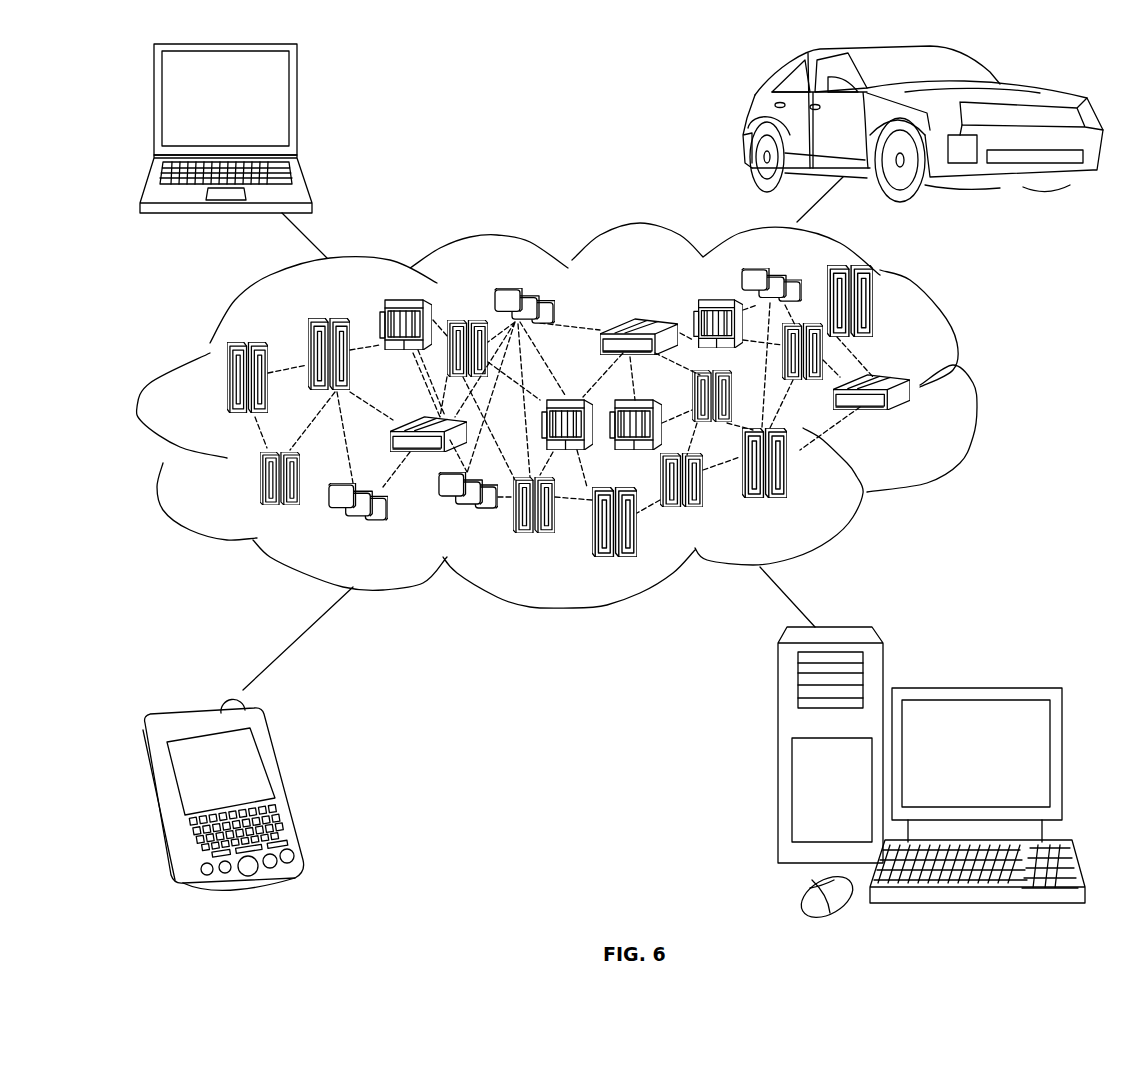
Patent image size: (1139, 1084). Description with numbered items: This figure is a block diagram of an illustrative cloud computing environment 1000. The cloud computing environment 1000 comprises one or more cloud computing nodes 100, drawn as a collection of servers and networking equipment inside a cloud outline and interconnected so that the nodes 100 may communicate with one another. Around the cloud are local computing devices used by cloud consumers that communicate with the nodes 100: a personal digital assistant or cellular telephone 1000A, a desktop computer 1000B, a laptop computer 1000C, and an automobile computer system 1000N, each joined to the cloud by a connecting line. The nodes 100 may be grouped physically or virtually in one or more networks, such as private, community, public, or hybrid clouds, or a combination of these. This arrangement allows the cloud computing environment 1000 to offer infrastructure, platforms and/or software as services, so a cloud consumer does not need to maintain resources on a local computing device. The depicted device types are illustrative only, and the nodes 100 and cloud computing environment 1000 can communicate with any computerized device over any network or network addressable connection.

The laptop computer 1000C is at (298, 108).
The automobile computer system 1000N is at (748, 128).
The cloud computing environment 1000 is at (975, 392).
The cloud computing nodes 100 is at (913, 420).
The personal digital assistant (PDA) or cellular telephone 1000A is at (287, 787).
The desktop computer 1000B is at (970, 688).